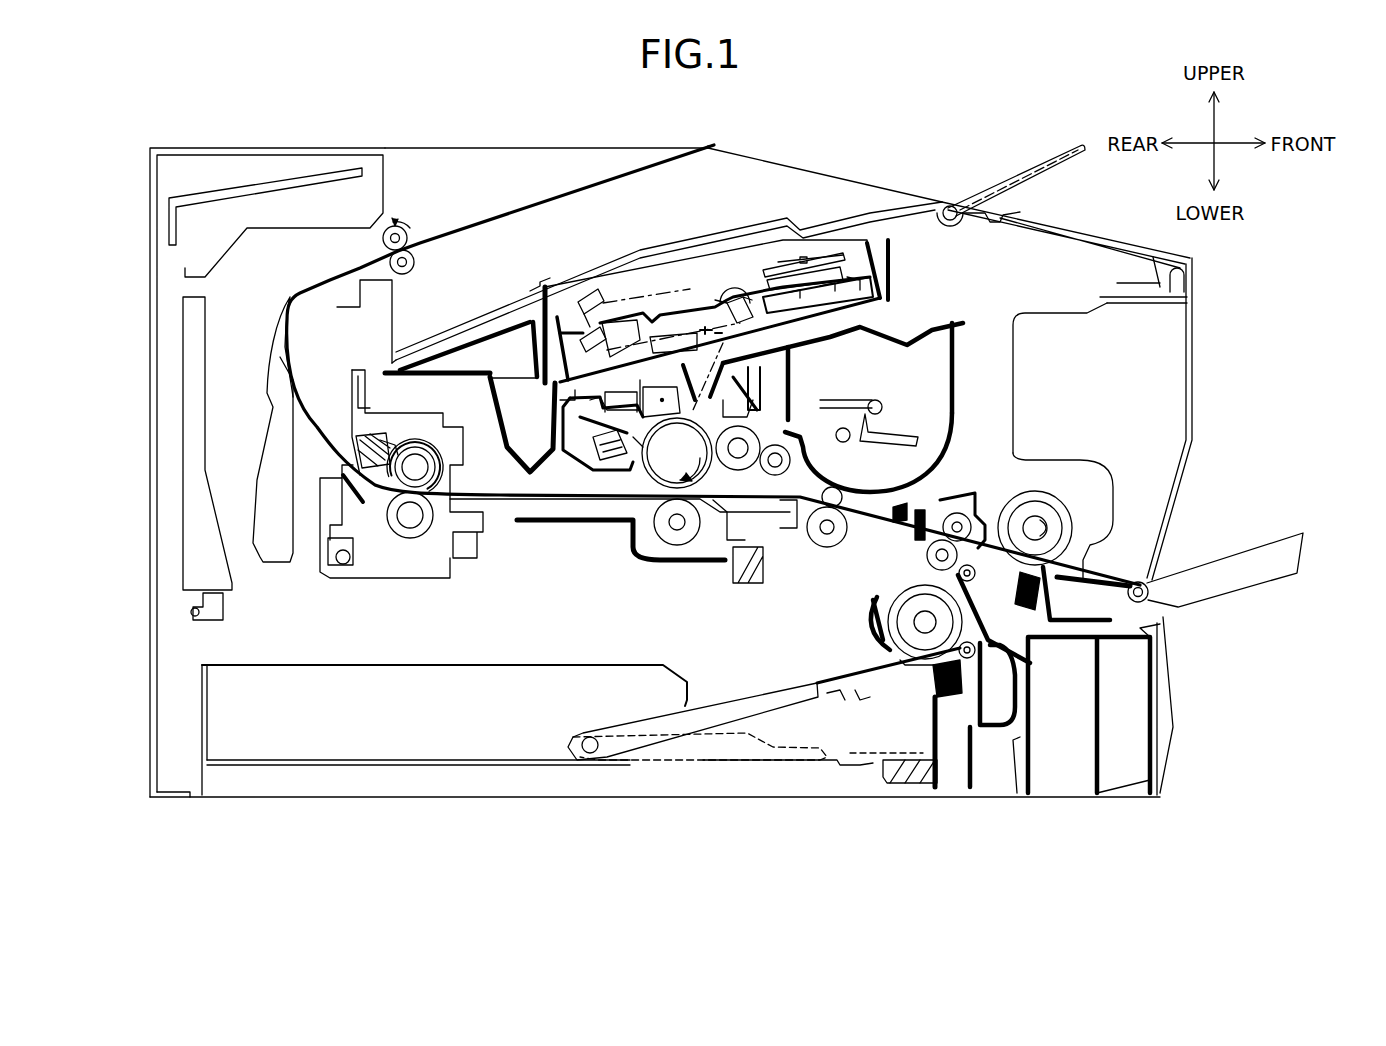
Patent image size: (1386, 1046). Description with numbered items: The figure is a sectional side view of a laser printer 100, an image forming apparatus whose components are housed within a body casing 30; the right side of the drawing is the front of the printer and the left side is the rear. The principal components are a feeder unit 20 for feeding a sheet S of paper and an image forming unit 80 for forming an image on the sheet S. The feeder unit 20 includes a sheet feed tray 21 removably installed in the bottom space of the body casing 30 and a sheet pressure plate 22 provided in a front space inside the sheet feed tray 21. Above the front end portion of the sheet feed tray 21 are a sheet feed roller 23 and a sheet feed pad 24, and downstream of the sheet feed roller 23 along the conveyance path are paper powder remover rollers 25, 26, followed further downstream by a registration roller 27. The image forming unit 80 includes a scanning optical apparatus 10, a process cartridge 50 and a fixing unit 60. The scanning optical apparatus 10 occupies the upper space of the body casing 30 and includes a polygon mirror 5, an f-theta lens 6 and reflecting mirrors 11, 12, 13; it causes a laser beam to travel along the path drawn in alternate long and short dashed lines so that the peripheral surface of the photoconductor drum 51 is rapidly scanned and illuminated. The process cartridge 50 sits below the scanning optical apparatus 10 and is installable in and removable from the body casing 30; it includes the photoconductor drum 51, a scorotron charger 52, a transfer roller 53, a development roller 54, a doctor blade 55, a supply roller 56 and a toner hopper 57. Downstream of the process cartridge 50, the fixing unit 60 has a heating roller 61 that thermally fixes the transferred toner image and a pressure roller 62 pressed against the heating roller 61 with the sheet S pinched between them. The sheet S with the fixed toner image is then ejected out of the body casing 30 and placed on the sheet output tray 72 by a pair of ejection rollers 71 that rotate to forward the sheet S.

The laser printer 100 is at (932, 133).
The body casing 30 is at (150, 441).
The sheet S is at (540, 204).
The ejection rollers 71 is at (383, 240).
The sheet output tray 72 is at (607, 262).
The scanning optical apparatus 10 is at (711, 296).
The reflecting mirror 11 is at (580, 300).
The reflecting mirror 13 is at (740, 283).
The polygon mirror 5 is at (776, 270).
The reflecting mirror 12 is at (600, 391).
The f-theta lens 6 is at (619, 390).
The process cartridge 50 is at (838, 415).
The toner hopper 57 is at (957, 380).
The supply roller 56 is at (787, 433).
The scorotron charger 52 is at (677, 453).
The photoconductor drum 51 is at (640, 487).
The development roller 54 is at (737, 423).
The doctor blade 55 is at (769, 421).
The paper powder remover roller 26 is at (947, 508).
The registration roller 27 is at (843, 532).
The sheet feed roller 23 is at (887, 615).
The sheet feed pad 24 is at (927, 675).
The paper powder remover roller 25 is at (983, 663).
The feeder unit 20 is at (536, 724).
The sheet feed tray 21 is at (202, 697).
The sheet pressure plate 22 is at (735, 697).
The fixing unit 60 is at (429, 493).
The heating roller 61 is at (420, 450).
The pressure roller 62 is at (407, 540).
The image forming unit 80 is at (620, 548).
The transfer roller 53 is at (687, 535).